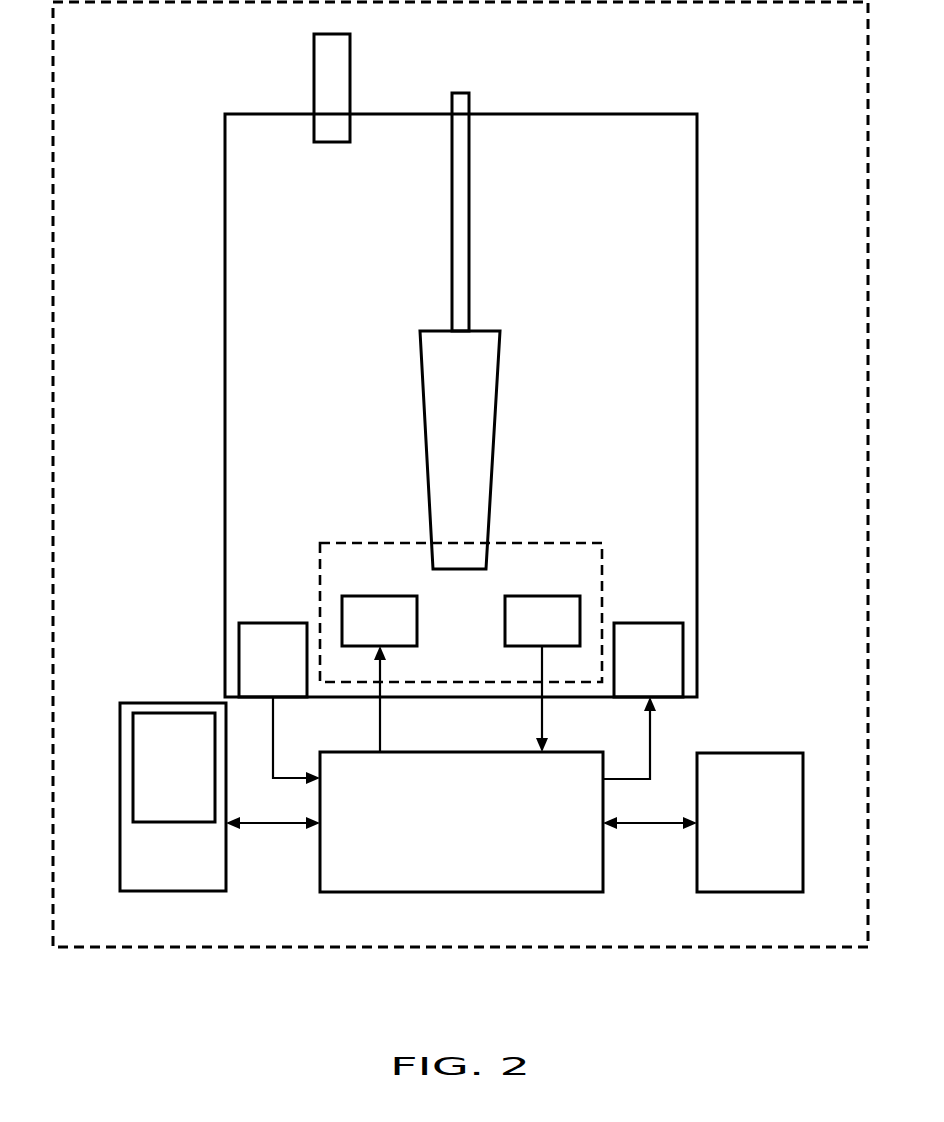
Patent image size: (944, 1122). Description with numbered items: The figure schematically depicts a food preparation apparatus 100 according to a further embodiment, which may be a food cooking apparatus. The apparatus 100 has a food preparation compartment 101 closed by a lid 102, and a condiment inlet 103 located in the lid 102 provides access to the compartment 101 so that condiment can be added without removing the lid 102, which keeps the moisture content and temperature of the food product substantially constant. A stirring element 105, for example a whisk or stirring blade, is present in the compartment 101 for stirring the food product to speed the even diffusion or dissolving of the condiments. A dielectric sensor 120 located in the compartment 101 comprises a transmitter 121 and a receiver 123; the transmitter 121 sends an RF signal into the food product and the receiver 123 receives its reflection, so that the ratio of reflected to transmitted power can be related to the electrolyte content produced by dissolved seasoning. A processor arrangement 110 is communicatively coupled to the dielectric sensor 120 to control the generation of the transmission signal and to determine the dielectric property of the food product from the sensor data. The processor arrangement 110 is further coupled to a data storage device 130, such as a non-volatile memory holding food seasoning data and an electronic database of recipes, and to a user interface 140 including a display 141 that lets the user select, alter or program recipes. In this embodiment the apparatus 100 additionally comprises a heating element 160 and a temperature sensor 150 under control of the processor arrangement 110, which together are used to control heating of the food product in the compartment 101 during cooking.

The food preparation apparatus 100 is at (764, 68).
The food preparation compartment 101 is at (417, 405).
The lid 102 is at (225, 183).
The condiment inlet 103 is at (314, 52).
The stirring element 105 is at (482, 378).
The processor arrangement 110 is at (482, 832).
The dielectric sensor 120 is at (562, 543).
The transmitter 121 is at (400, 634).
The receiver 123 is at (562, 633).
The data storage device 130 is at (770, 839).
The user interface 140 is at (194, 873).
The display 141 is at (194, 784).
The temperature sensor 150 is at (294, 678).
The heating element 160 is at (669, 676).